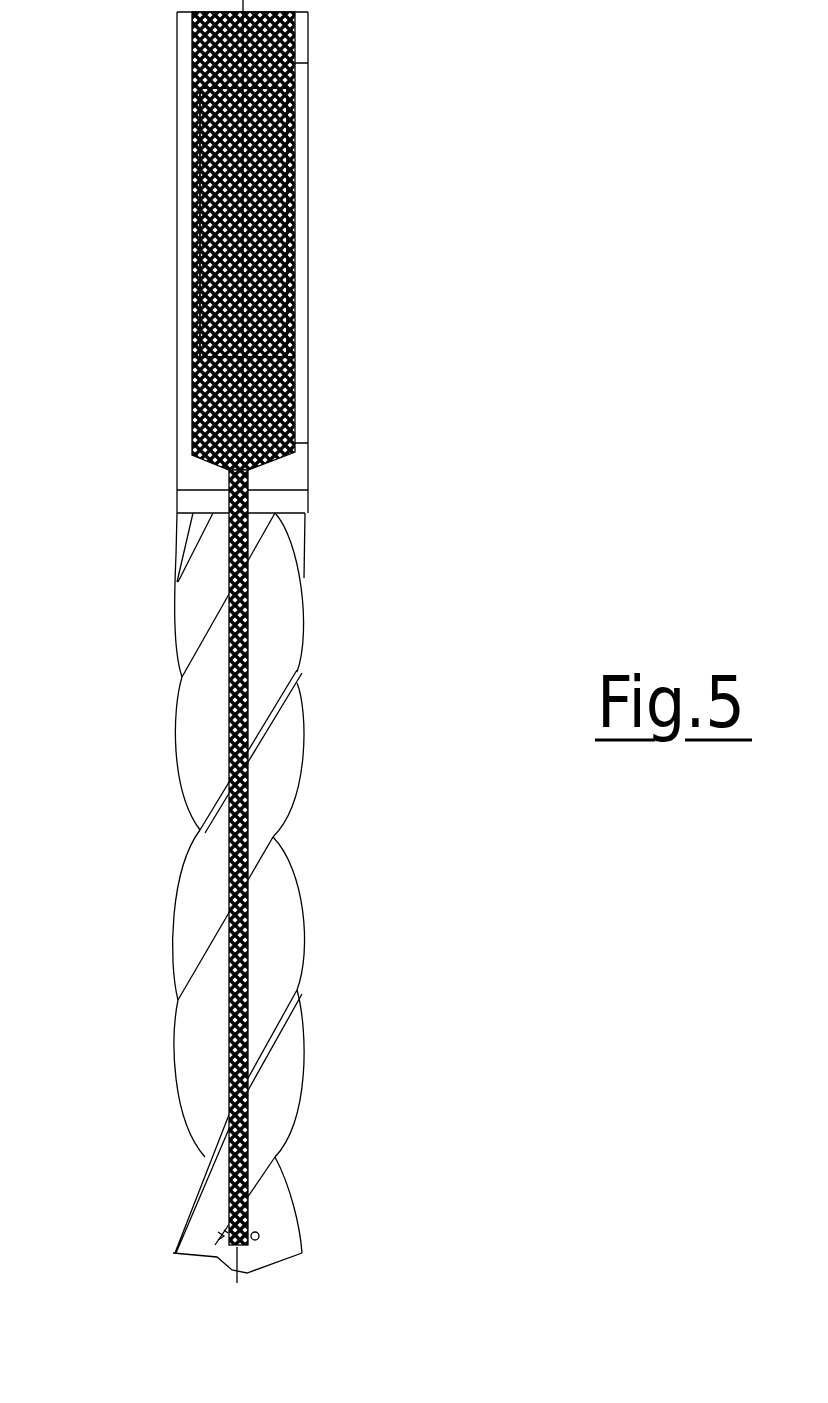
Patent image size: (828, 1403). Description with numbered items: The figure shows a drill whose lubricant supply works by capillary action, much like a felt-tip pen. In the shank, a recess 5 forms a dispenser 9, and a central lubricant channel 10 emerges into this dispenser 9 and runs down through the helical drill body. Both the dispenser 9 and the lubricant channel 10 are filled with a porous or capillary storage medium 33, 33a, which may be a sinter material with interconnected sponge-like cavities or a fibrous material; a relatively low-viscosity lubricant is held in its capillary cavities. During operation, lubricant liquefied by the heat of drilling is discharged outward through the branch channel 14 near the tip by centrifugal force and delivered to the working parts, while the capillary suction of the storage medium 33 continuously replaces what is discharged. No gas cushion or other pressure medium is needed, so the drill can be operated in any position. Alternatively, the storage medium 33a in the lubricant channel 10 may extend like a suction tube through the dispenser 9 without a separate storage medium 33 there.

The recess 5 is at (288, 264).
The dispenser 9 is at (290, 150).
The central lubricant channel 10 is at (230, 710).
The branch channel 14 is at (259, 1236).
The porous or capillary storage medium 33 is at (220, 241).
The capillary storage medium in the lubricant channel 33a is at (245, 950).